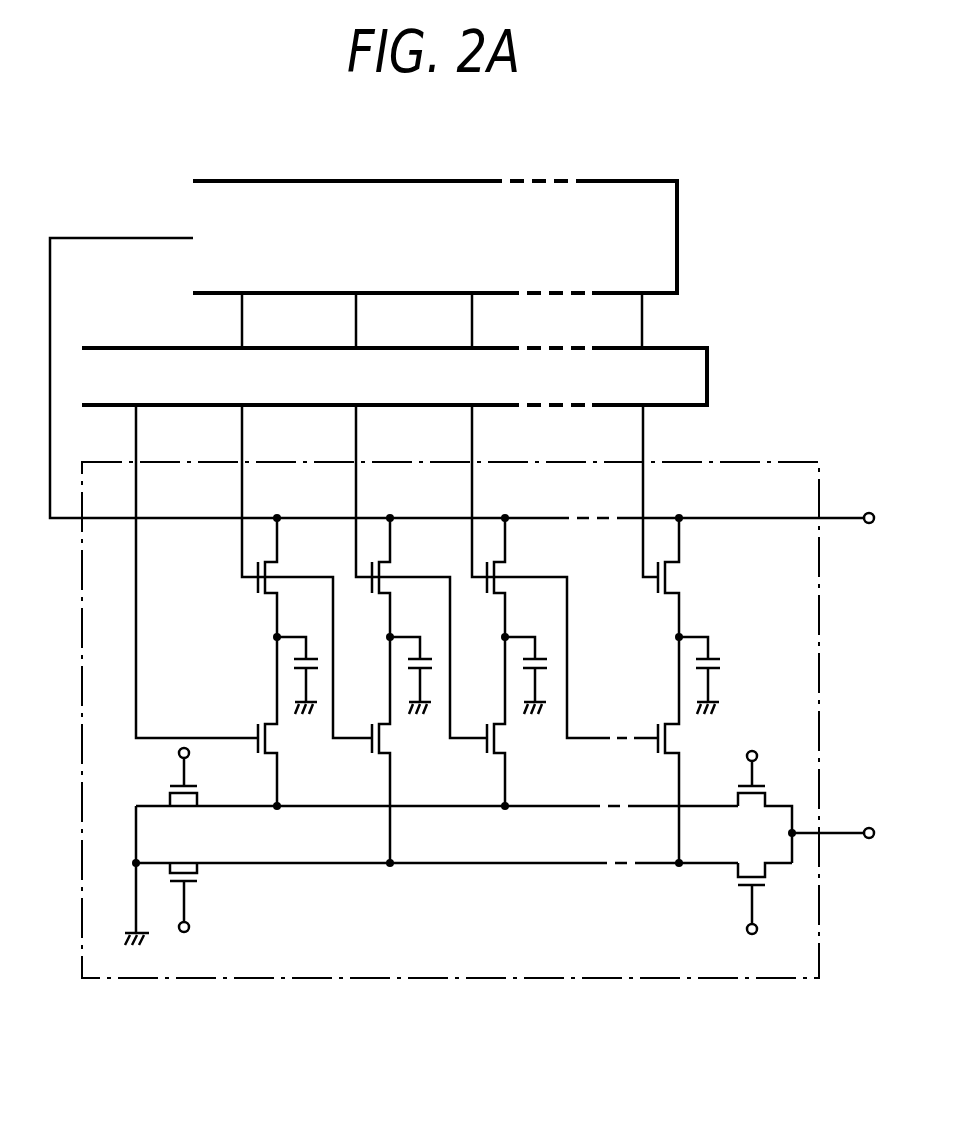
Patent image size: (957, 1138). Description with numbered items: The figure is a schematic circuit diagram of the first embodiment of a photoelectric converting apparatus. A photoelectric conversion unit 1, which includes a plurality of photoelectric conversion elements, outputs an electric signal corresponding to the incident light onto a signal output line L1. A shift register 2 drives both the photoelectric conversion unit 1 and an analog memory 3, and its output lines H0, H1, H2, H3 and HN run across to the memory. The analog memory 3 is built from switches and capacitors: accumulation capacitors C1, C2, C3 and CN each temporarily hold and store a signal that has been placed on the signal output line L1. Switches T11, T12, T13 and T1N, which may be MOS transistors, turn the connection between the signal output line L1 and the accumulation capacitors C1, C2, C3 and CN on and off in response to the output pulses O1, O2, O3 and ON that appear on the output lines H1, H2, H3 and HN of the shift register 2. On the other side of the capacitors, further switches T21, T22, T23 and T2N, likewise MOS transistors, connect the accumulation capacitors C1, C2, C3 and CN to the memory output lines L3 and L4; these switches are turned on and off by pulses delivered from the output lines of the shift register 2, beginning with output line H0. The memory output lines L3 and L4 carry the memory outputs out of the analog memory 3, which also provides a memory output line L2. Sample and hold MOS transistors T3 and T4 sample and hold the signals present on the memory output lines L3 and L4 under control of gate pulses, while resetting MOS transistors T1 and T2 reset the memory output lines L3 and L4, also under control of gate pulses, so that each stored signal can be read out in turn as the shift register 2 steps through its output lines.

The photoelectric conversion unit 1 is at (643, 181).
The shift register 2 is at (708, 394).
The analog memory 3 is at (793, 462).
The output pulse O1 is at (245, 320).
The output pulse O2 is at (359, 320).
The output pulse O3 is at (475, 320).
The output pulse ON is at (645, 320).
The output line of the shift register H0 is at (138, 437).
The output line of the shift register H1 is at (245, 437).
The output line of the shift register H2 is at (358, 437).
The output line of the shift register H3 is at (475, 437).
The output line of the shift register HN is at (645, 437).
The signal output line L1 is at (848, 518).
The memory output line L2 is at (844, 833).
The memory output line L3 is at (700, 806).
The memory output line L4 is at (699, 863).
The resetting MOS transistor T1 is at (200, 790).
The resetting MOS transistor T2 is at (200, 880).
The sample and hold MOS transistor T3 is at (785, 771).
The sample and hold MOS transistor T4 is at (768, 880).
The switch T11 is at (272, 573).
The switch T12 is at (386, 573).
The switch T13 is at (501, 573).
The switch T1N is at (674, 573).
The switch T21 is at (276, 742).
The switch T22 is at (389, 742).
The switch T23 is at (504, 742).
The switch T2N is at (676, 737).
The accumulation capacitor C1 is at (317, 652).
The accumulation capacitor C2 is at (431, 652).
The accumulation capacitor C3 is at (546, 652).
The accumulation capacitor CN is at (716, 650).